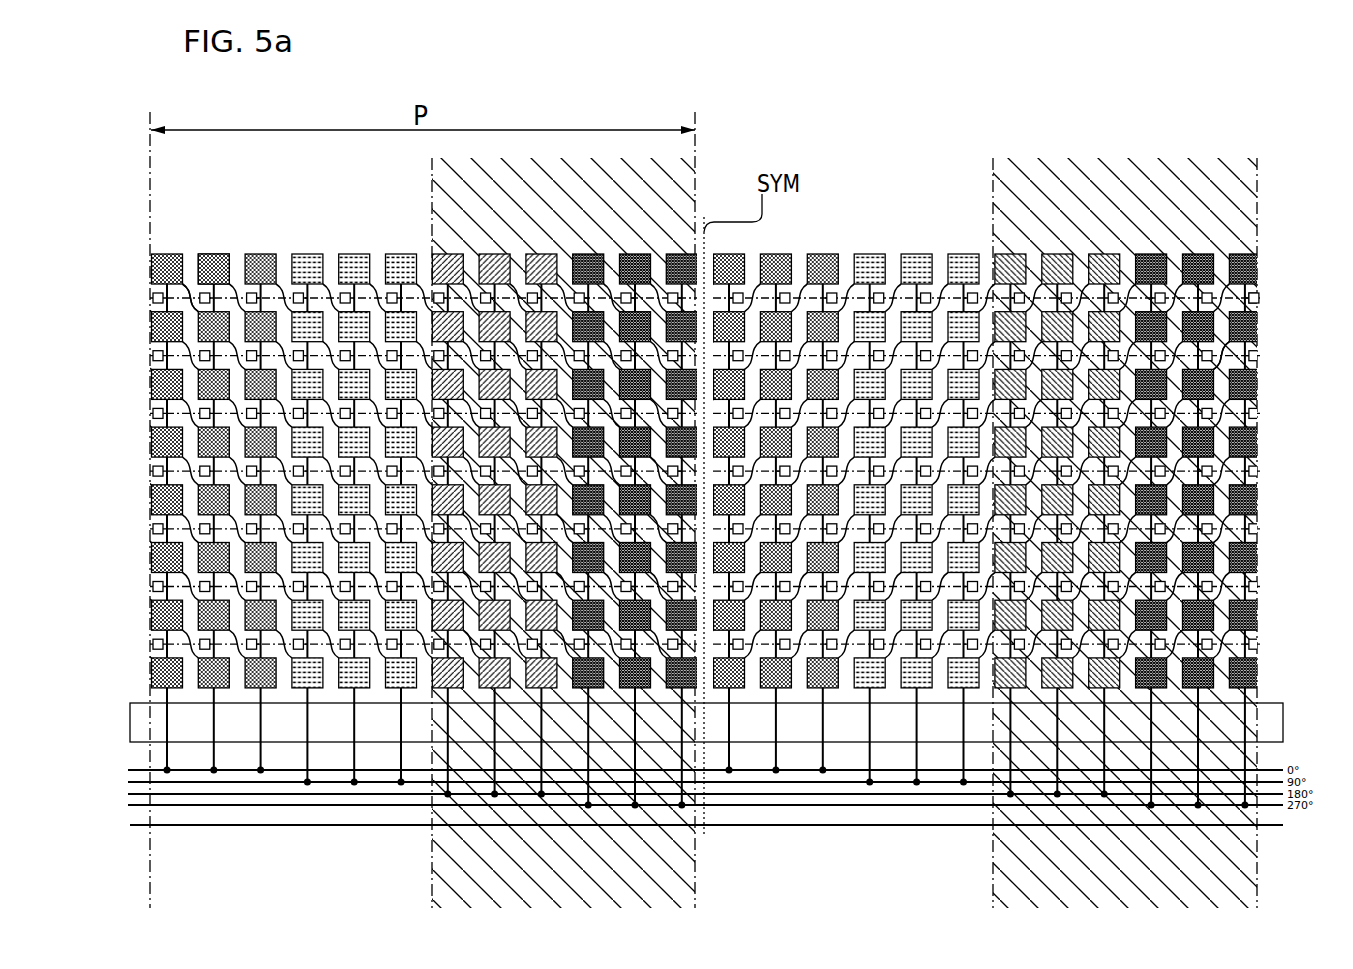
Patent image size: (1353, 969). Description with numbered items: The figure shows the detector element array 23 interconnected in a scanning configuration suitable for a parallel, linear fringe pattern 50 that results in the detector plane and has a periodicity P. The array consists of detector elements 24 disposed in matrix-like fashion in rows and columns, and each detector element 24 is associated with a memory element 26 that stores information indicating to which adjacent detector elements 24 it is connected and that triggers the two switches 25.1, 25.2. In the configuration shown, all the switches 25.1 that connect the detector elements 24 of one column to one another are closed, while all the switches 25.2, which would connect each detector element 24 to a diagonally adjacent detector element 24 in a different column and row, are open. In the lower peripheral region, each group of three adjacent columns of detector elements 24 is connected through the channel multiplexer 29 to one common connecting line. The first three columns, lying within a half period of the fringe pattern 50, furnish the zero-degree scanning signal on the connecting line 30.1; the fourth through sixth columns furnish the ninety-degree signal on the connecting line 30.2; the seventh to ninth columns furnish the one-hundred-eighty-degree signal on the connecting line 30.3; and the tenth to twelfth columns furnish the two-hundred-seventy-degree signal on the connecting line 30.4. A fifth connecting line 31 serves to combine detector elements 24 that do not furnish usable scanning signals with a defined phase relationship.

The detector element array 23 is at (122, 462).
The detector element 24 is at (213, 252).
The switch 25.1 is at (1245, 364).
The switch 25.2 is at (190, 285).
The memory element 26 is at (1259, 298).
The channel multiplexer 29 is at (146, 721).
The connecting line 30.1 is at (188, 772).
The connecting line 30.2 is at (242, 784).
The connecting line 30.3 is at (342, 795).
The connecting line 30.4 is at (790, 807).
The fifth connecting line 31 is at (852, 826).
The fringe pattern 50 is at (1102, 141).